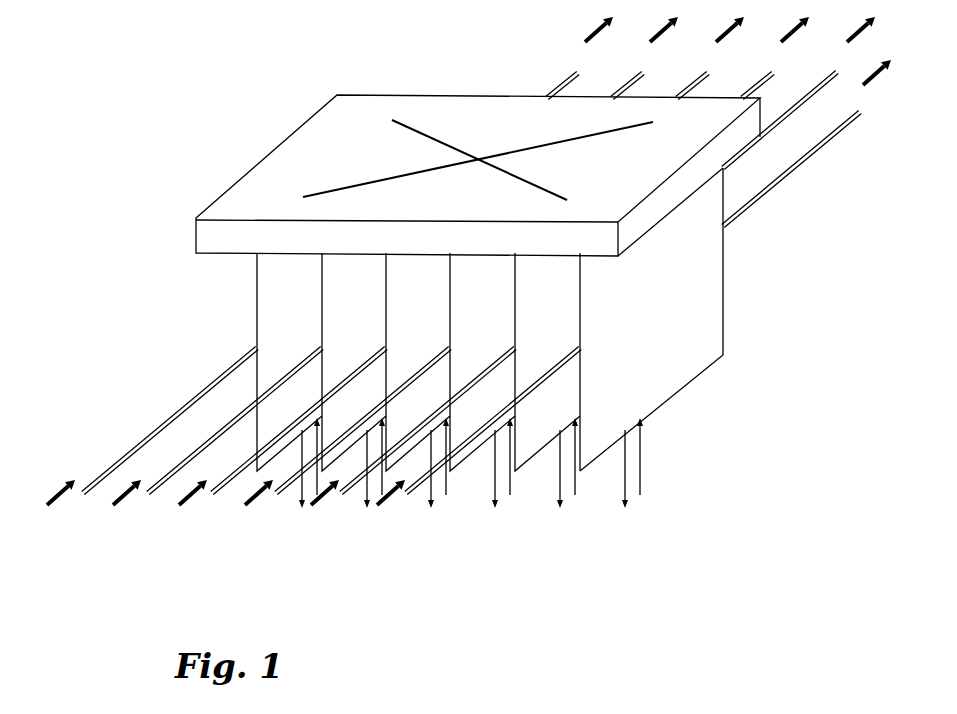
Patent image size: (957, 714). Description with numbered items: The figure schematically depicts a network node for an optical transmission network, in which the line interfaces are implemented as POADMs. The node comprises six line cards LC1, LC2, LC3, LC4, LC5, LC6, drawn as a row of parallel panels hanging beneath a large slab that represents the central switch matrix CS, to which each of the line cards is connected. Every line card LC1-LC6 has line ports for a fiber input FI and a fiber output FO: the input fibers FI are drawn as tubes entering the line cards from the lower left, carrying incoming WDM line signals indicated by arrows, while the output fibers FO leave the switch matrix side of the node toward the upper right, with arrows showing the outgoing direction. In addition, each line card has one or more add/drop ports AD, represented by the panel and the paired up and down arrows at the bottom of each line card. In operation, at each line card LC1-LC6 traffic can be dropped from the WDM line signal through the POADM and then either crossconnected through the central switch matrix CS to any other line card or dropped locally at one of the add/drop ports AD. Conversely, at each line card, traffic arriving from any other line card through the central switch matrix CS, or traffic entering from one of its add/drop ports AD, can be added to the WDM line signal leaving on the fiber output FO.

The central switch matrix CS is at (470, 175).
The fiber output FO is at (708, 149).
The fiber input FI is at (332, 443).
The add/drop ports AD is at (651, 352).
The line card LC1 is at (619, 303).
The line card LC2 is at (554, 303).
The line card LC3 is at (489, 303).
The line card LC4 is at (425, 303).
The line card LC5 is at (361, 303).
The line card LC6 is at (296, 303).